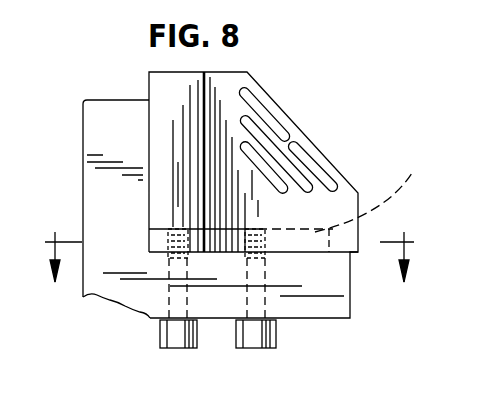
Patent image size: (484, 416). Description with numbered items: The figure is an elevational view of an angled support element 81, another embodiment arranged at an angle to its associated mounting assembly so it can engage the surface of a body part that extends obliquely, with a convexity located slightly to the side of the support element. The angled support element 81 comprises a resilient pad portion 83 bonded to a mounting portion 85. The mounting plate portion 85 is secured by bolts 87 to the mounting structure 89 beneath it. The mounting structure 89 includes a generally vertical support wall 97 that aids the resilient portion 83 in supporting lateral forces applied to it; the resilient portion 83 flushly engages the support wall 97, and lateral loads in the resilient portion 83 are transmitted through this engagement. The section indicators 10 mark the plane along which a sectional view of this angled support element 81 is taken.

The section line 10- 10 is at (227, 234).
The angled support element 81 is at (312, 213).
The resilient pad portion 83 is at (167, 113).
The mounting portion 85 is at (371, 192).
The bolts 87 is at (182, 350).
The mounting structure 89 is at (307, 308).
The support wall 97 is at (93, 138).